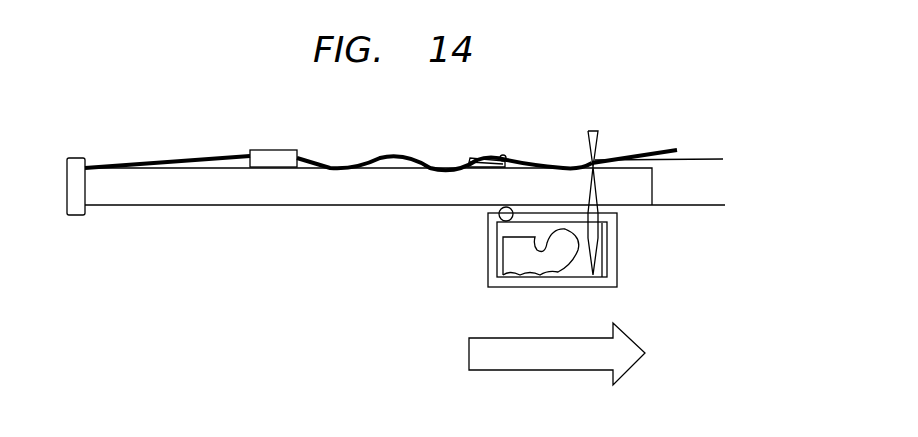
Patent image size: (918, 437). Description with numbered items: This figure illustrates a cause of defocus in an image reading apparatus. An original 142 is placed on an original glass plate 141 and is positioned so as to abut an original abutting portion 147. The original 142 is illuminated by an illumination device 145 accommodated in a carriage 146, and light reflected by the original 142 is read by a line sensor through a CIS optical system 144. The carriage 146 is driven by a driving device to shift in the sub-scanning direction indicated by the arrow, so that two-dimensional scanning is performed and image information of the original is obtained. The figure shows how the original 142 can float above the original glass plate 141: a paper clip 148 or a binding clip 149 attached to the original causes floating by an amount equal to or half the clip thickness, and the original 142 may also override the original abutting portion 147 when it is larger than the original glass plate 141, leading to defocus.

The original glass plate 141 is at (139, 193).
The original 142 is at (192, 160).
The CIS optical system 144 is at (607, 225).
The illumination device 145 is at (513, 256).
The carriage 146 is at (487, 227).
The original abutting portion 147 is at (615, 158).
The paper clip 148 is at (502, 156).
The binding clip 149 is at (273, 150).